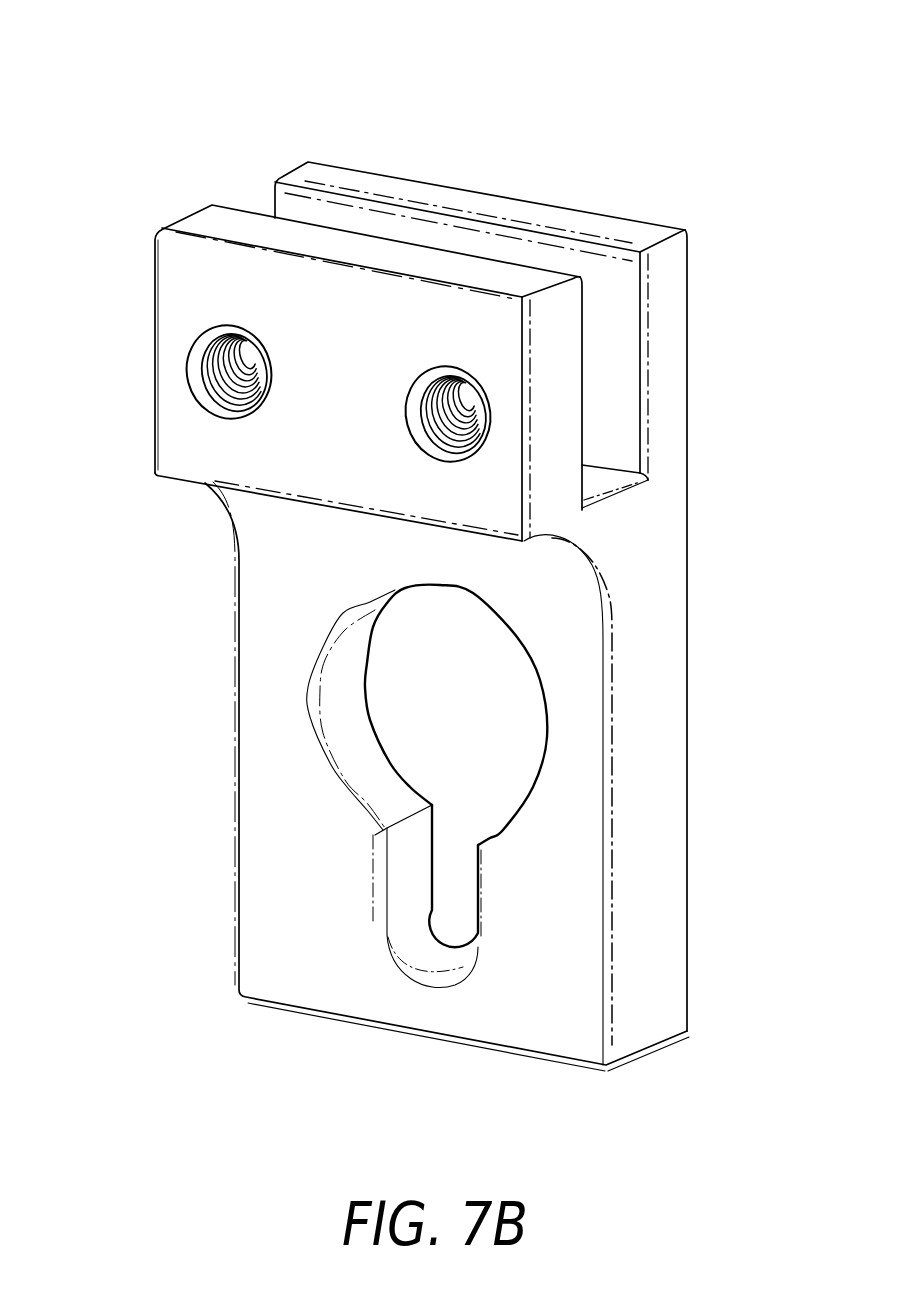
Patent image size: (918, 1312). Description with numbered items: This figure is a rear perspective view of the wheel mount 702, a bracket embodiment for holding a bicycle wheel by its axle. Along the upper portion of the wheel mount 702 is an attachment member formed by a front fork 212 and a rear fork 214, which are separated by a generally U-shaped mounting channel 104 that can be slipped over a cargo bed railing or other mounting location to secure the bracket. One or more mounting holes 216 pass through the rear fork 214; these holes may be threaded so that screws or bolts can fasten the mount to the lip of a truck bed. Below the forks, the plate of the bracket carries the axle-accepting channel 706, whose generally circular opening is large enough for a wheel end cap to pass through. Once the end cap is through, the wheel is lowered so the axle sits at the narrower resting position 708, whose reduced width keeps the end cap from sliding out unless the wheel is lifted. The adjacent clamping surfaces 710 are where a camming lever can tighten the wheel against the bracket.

The wheel mount 702 is at (88, 128).
The front fork 212 is at (672, 269).
The rear fork 214 is at (173, 271).
The mounting channel 104 is at (597, 421).
The mounting holes 216 is at (429, 457).
The axle-accepting channel 706 is at (421, 713).
The resting position 708 is at (443, 945).
The clamping surfaces 710 is at (336, 921).